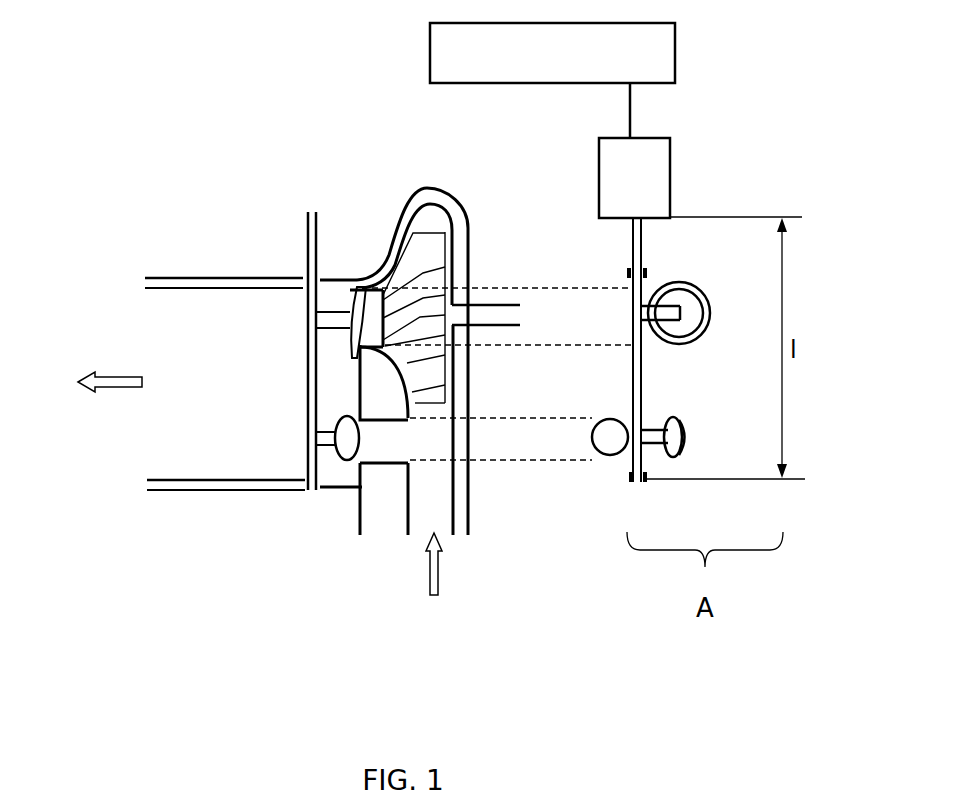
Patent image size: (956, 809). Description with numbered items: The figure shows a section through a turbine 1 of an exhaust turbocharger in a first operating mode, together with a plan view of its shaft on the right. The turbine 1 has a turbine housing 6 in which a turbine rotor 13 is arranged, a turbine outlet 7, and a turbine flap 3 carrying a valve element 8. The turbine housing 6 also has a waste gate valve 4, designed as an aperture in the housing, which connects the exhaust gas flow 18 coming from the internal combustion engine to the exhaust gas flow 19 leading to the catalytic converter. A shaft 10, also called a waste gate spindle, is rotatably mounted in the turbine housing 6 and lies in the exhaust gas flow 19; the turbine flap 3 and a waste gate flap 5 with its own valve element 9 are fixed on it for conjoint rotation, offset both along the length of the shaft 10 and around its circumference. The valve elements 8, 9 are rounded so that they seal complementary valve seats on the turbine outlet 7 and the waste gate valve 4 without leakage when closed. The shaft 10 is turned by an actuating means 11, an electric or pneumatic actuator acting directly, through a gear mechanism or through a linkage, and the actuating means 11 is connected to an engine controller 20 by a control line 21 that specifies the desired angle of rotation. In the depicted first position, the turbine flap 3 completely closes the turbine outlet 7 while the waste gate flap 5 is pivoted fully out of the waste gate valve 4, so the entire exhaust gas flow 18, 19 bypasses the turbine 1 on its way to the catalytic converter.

The turbine 1 is at (383, 250).
The turbine flap 3 is at (337, 307).
The waste gate valve 4 is at (378, 456).
The waste gate flap 5 is at (327, 450).
The turbine housing 6 is at (420, 193).
The turbine outlet 7 is at (373, 307).
The valve element 8 is at (358, 284).
The valve element 9 is at (343, 448).
The shaft 10 is at (308, 382).
The actuating means 11 is at (620, 192).
The turbine rotor 13 is at (423, 297).
The exhaust gas flow 18 is at (438, 583).
The exhaust gas flow 19 is at (114, 377).
The engine controller 20 is at (539, 67).
The control line 21 is at (630, 118).